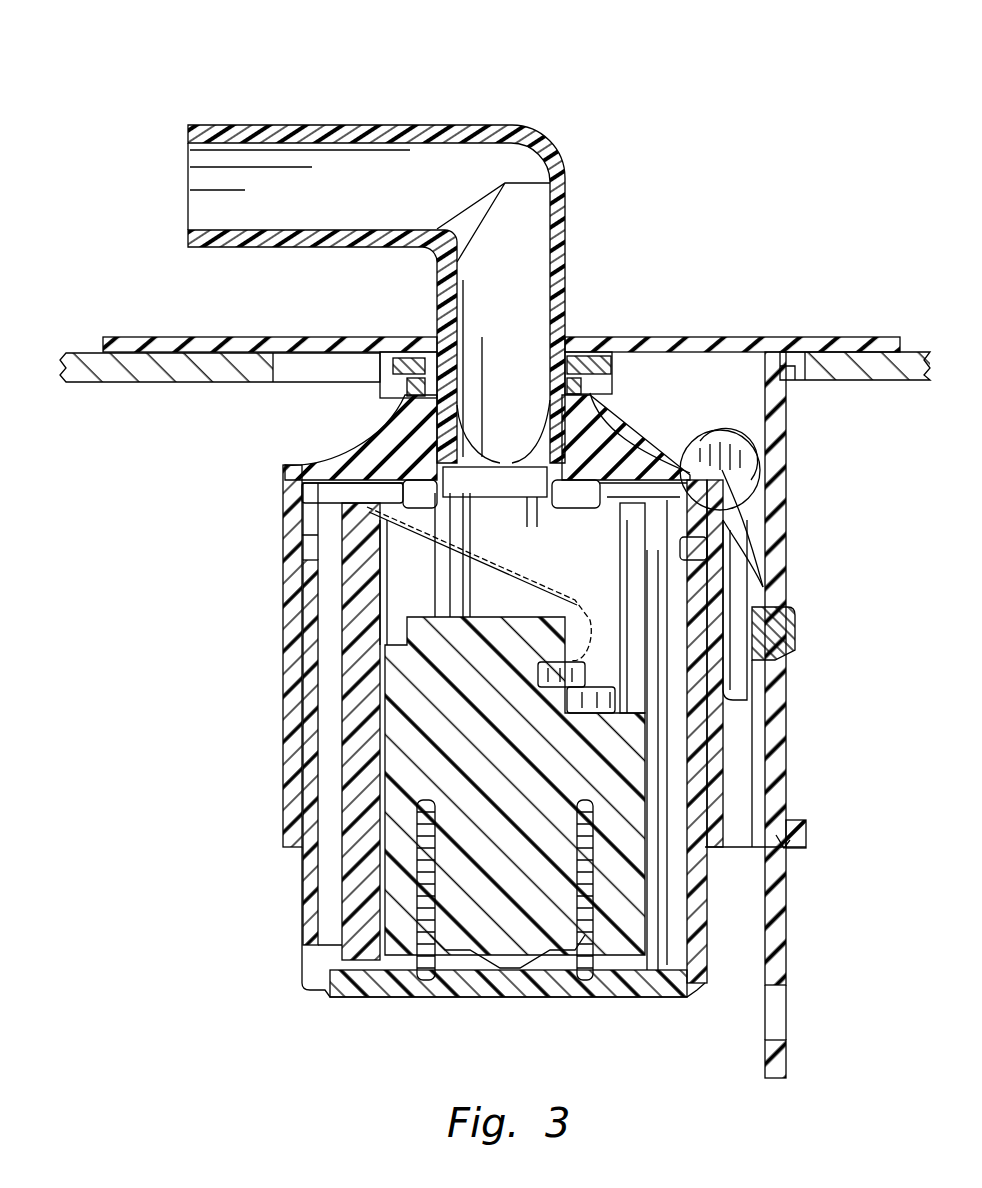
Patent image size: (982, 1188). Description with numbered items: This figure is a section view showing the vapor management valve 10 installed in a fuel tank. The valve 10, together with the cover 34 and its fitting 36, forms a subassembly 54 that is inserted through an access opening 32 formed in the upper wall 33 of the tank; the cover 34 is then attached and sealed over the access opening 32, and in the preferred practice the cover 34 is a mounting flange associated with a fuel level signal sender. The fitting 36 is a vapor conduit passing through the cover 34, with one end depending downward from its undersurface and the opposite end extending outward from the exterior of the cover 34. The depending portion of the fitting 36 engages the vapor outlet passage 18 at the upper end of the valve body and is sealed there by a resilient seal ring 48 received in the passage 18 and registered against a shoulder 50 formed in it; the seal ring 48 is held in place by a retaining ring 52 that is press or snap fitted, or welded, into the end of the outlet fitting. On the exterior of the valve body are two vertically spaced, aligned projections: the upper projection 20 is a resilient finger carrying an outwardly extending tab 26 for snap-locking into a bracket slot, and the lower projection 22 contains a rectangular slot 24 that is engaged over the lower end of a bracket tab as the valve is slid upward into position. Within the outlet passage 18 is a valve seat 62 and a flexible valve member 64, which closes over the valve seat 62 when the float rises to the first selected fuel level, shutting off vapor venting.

The vapor management valve 10 is at (256, 899).
The vapor outlet passage 18 is at (503, 400).
The upper projection 20 is at (784, 516).
The lower projection 22 is at (805, 828).
The rectangular slot 24 is at (778, 838).
The tab 26 is at (787, 645).
The access opening 32 is at (795, 368).
The upper wall 33 is at (86, 352).
The cover 34 is at (715, 335).
The fitting 36 is at (565, 207).
The resilient seal ring 48 is at (405, 395).
The shoulder 50 is at (565, 380).
The retaining ring 52 is at (408, 337).
The subassembly 54 is at (722, 152).
The valve seat 62 is at (555, 545).
The flexible valve member 64 is at (383, 565).